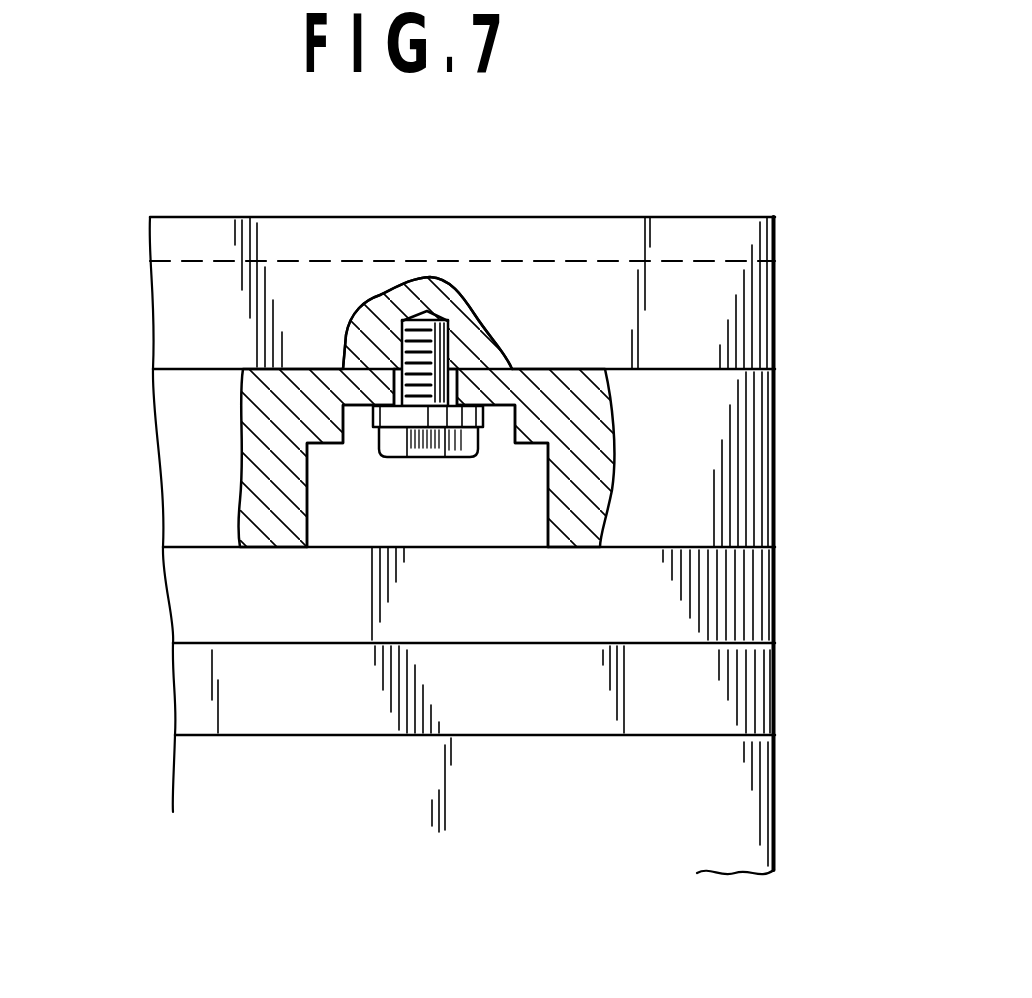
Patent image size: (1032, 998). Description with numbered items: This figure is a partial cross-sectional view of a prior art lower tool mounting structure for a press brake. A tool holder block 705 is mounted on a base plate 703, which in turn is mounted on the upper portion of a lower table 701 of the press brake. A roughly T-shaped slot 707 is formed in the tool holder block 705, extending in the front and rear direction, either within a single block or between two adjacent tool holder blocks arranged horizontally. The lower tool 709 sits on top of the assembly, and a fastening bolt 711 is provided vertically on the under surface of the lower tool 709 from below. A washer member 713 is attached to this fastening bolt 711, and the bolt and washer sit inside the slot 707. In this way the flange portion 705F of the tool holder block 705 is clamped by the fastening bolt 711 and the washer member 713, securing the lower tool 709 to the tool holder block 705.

The lower table 701 is at (745, 793).
The base plate 703 is at (757, 598).
The tool holder block 705 is at (180, 460).
The flange portion 705F is at (478, 388).
The T-shaped slot 707 is at (497, 520).
The lower tool 709 is at (752, 323).
The fastening bolt 711 is at (478, 452).
The washer member 713 is at (485, 395).